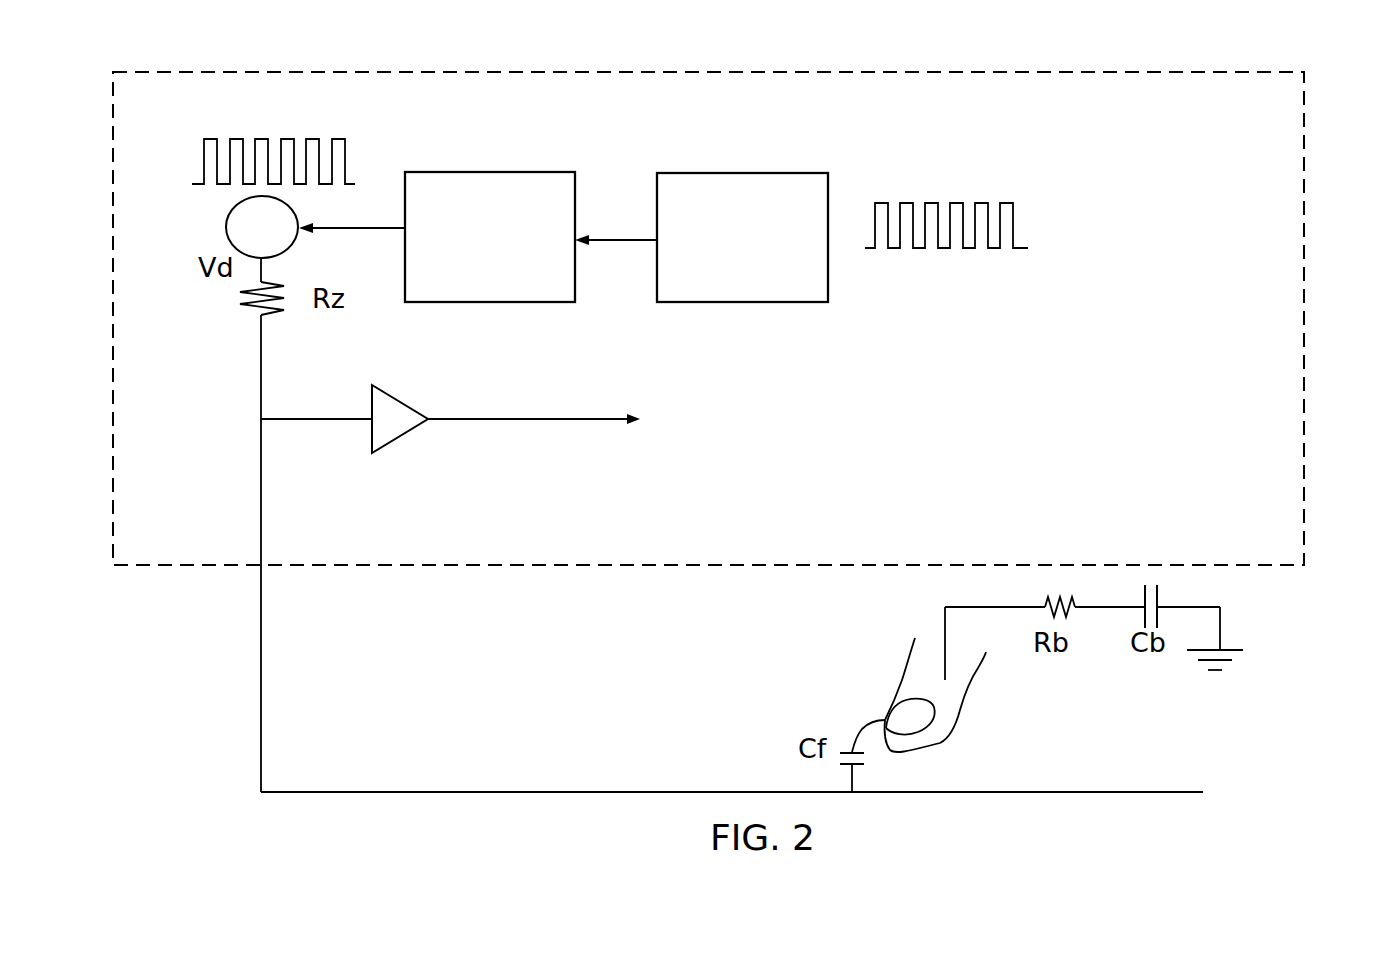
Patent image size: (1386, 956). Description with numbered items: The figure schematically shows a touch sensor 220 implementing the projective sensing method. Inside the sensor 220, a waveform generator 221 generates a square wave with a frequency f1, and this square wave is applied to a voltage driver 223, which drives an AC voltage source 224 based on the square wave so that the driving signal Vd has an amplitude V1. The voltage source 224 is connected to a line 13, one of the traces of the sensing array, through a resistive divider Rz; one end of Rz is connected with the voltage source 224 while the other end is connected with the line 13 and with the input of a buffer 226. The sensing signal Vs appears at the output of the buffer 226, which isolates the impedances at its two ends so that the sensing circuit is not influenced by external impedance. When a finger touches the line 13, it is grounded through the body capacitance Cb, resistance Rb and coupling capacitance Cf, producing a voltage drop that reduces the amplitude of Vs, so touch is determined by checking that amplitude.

The line 13 is at (1127, 790).
The touch sensor 220 is at (1301, 345).
The waveform generator 221 is at (682, 172).
The voltage driver 223 is at (438, 172).
The voltage source 224 is at (226, 225).
The buffer 226 is at (387, 395).